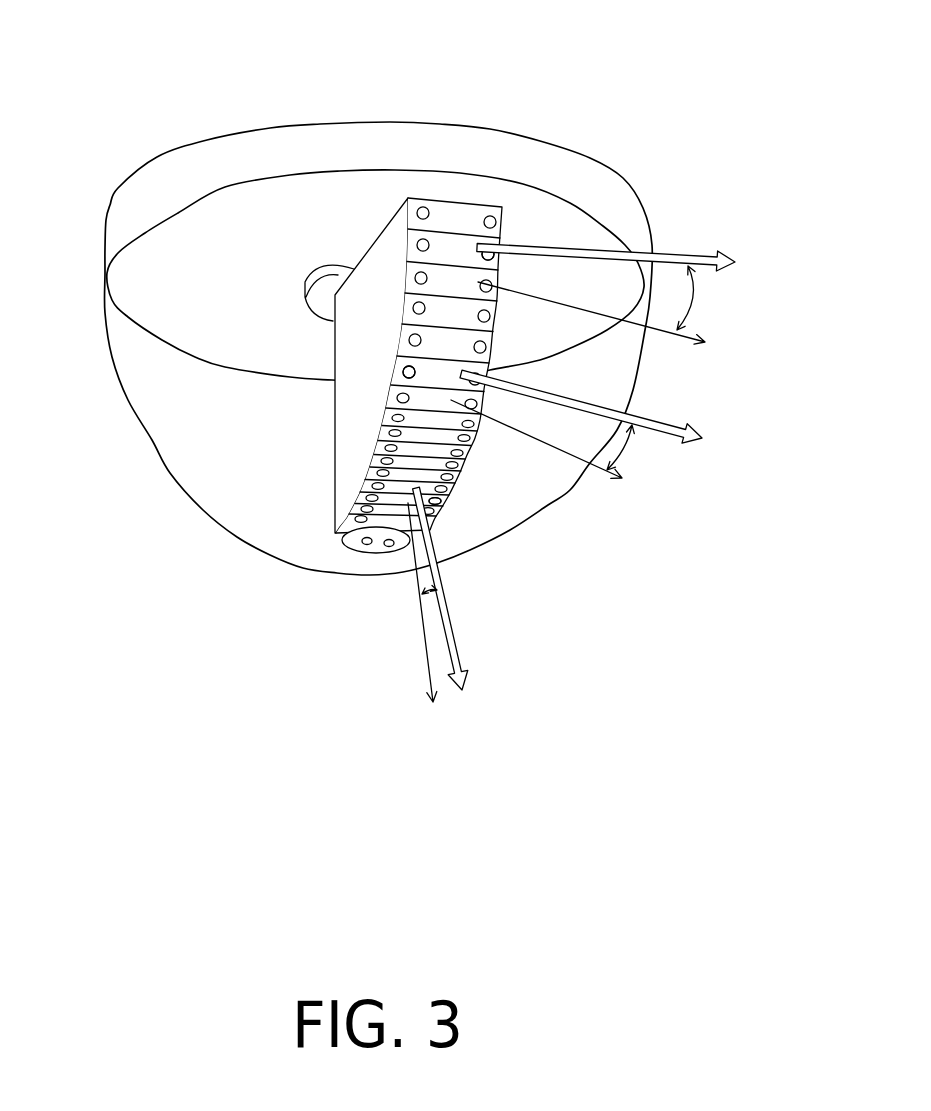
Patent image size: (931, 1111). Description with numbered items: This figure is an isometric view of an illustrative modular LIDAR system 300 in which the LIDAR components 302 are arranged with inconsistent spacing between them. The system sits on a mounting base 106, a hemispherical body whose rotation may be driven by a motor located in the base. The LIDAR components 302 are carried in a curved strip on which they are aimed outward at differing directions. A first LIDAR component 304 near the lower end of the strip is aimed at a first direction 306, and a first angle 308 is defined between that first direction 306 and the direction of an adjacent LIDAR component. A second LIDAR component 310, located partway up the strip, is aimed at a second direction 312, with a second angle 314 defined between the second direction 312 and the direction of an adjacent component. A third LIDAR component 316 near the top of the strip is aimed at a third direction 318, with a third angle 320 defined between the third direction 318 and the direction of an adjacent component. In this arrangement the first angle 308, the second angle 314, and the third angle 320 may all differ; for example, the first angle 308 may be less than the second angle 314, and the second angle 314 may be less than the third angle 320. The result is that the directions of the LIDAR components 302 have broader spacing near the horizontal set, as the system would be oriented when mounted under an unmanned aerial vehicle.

The modular LIDAR system 300 is at (146, 95).
The mounting base 106 is at (270, 128).
The LIDAR components 302 is at (455, 255).
The first LIDAR component 304 is at (443, 504).
The first direction 306 is at (462, 663).
The first angle 308 is at (427, 597).
The second LIDAR component 310 is at (463, 366).
The second direction 312 is at (663, 433).
The second angle 314 is at (623, 447).
The third LIDAR component 316 is at (483, 233).
The third direction 318 is at (713, 267).
The third angle 320 is at (693, 300).